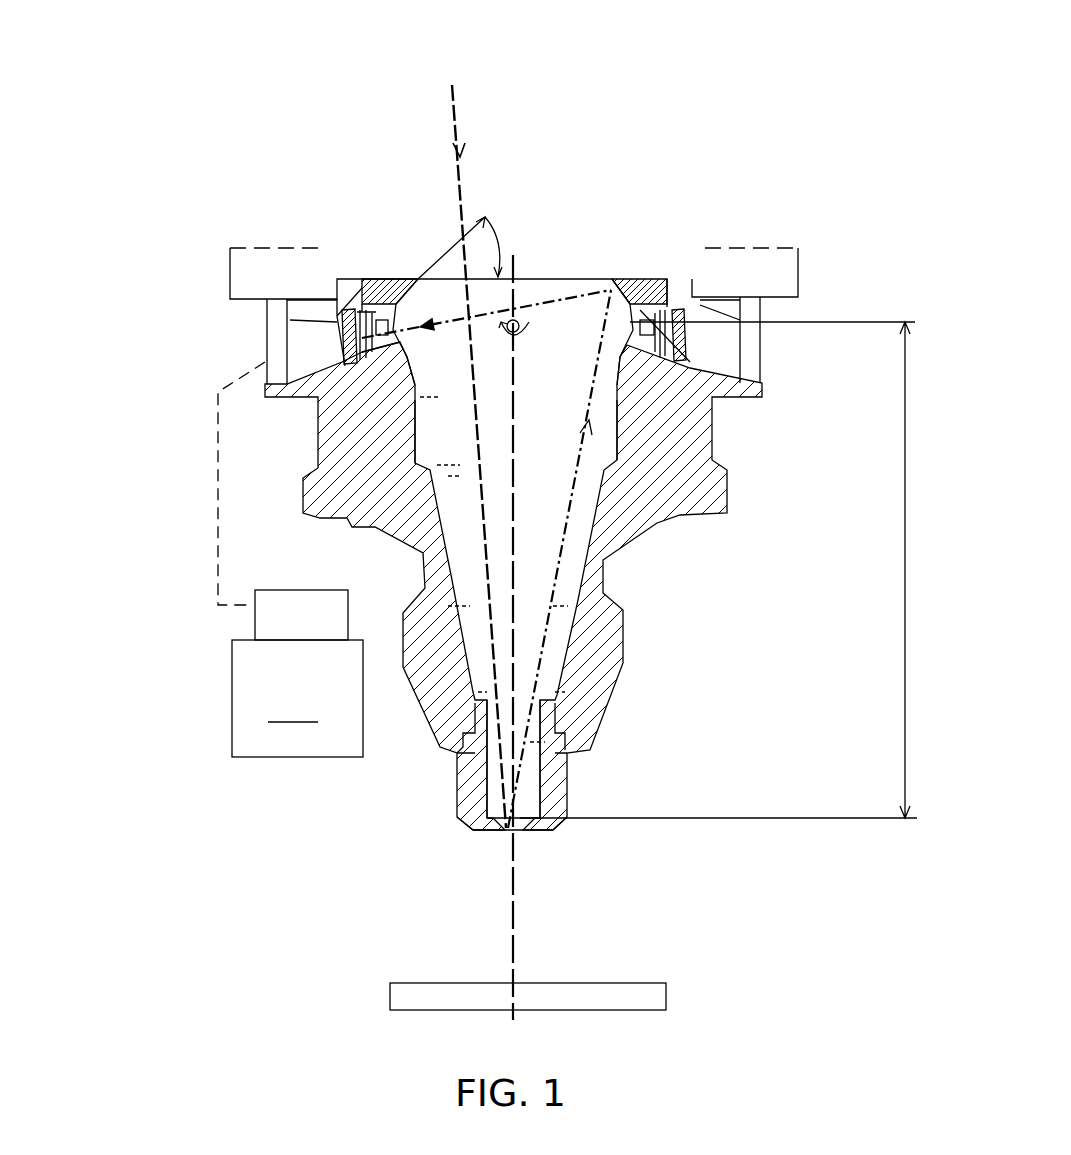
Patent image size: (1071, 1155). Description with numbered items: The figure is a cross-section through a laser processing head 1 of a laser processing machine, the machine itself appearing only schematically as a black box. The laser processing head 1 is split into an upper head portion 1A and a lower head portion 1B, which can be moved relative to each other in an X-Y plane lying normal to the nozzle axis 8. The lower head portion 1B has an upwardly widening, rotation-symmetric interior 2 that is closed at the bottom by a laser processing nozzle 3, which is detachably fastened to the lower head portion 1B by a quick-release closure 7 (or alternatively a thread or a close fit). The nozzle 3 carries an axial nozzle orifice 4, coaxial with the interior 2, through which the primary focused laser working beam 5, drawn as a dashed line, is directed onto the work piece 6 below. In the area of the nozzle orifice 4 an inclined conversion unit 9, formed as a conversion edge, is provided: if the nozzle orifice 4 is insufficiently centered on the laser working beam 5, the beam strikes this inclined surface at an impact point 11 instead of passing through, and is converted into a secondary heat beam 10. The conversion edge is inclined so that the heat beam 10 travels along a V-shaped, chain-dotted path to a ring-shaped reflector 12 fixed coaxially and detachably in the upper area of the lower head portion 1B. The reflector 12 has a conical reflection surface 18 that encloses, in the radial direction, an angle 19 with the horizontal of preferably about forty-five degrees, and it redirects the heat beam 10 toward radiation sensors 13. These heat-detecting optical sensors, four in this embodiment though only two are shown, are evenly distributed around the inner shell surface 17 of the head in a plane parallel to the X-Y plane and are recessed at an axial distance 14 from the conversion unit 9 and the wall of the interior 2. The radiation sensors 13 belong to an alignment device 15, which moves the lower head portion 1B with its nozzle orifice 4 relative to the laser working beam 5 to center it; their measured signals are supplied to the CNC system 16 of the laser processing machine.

The laser processing head 1 is at (843, 107).
The upper head portion 1A is at (232, 217).
The lower head portion 1B is at (746, 633).
The interior 2 is at (555, 395).
The laser processing nozzle 3 is at (562, 770).
The nozzle orifice 4 is at (517, 832).
The laser working beam 5 is at (460, 110).
The work piece 6 is at (567, 995).
The quick-release closure 7 is at (440, 748).
The nozzle axis 8 is at (520, 918).
The conversion unit 9 is at (487, 827).
The heat beam 10 is at (547, 630).
The impact point 11 is at (480, 835).
The reflector 12 is at (358, 282).
The radiation sensor 13 is at (300, 334).
The axial distance 14 is at (905, 522).
The alignment device 15 is at (199, 344).
The CNC system 16 is at (255, 632).
The inner shell surface 17 is at (455, 368).
The conical reflection surface 18 is at (418, 279).
The angle 19 is at (498, 247).